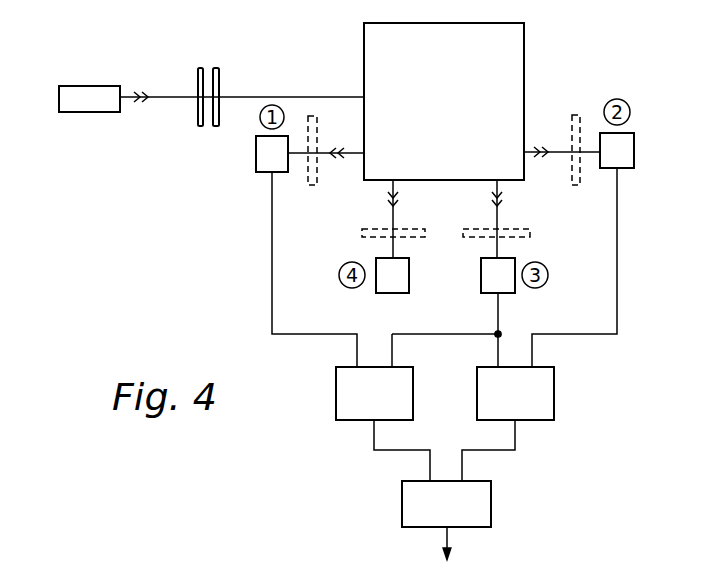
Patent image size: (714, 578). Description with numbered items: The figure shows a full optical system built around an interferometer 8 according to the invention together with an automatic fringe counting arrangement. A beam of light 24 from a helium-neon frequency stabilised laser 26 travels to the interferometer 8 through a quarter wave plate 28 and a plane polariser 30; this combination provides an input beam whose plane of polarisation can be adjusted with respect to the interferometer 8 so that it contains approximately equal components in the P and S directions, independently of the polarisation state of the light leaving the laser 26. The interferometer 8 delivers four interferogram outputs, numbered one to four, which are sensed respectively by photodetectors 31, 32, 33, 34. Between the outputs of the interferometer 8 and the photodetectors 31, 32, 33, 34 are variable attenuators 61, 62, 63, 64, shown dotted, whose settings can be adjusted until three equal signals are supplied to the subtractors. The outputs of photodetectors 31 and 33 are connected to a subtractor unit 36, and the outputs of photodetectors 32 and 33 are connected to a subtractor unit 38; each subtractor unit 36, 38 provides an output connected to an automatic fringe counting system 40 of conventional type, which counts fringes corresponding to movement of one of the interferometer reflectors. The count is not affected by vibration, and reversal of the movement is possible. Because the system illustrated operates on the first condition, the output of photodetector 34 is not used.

The interferometer 8 is at (448, 110).
The beam of light 24 is at (174, 96).
The helium-neon frequency stabilised laser 26 is at (95, 112).
The quarter wave plate 28 is at (198, 113).
The plane polariser 30 is at (222, 74).
The photodetector 31 is at (256, 156).
The photodetector 32 is at (610, 170).
The photodetector 33 is at (486, 293).
The photodetector 34 is at (400, 293).
The subtractor unit 36 is at (387, 403).
The subtractor unit 38 is at (532, 403).
The automatic fringe counting system 40 is at (458, 518).
The variable attenuator 61 is at (307, 117).
The variable attenuator 62 is at (571, 118).
The variable attenuator 63 is at (486, 228).
The variable attenuator 64 is at (366, 228).